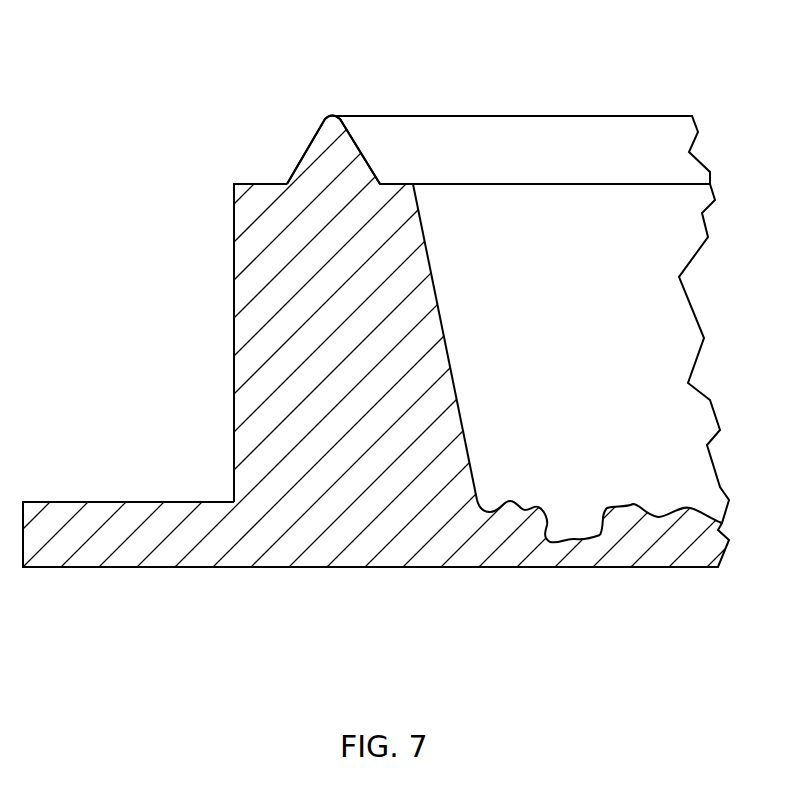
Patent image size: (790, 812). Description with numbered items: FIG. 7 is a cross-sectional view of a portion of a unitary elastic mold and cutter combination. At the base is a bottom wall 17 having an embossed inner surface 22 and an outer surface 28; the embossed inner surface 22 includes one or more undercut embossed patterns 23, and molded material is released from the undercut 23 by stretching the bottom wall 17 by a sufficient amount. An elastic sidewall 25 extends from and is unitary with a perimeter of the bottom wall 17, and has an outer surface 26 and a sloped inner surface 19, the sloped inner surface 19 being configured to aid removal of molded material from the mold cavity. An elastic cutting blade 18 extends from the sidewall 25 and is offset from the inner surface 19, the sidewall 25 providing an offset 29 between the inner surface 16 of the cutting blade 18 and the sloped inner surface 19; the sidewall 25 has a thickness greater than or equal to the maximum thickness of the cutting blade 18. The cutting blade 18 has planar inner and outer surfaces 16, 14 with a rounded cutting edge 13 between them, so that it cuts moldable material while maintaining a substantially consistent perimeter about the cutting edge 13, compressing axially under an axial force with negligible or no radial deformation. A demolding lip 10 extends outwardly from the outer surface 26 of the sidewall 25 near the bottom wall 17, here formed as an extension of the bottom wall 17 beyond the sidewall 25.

The demolding lip 10 is at (93, 517).
The rounded cutting edge 13 is at (323, 115).
The outer surface of cutting blade 14 is at (302, 158).
The inner surface of cutting blade 16 is at (358, 143).
The bottom wall 17 is at (633, 548).
The elastic cutting blade 18 is at (328, 143).
The sloped inner surface 19 is at (453, 378).
The embossed inner surface 22 is at (673, 510).
The undercut embossed pattern 23 is at (550, 528).
The elastic sidewall 25 is at (268, 301).
The outer surface of sidewall 26 is at (232, 368).
The outer surface of bottom wall 28 is at (538, 567).
The offset 29 is at (400, 183).